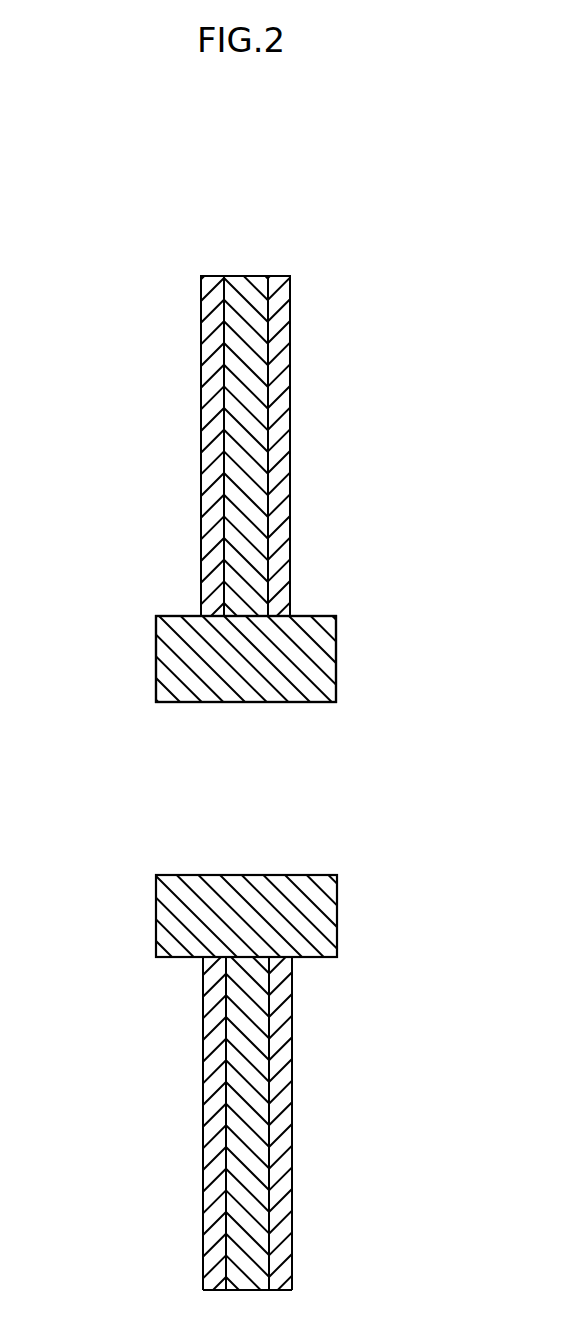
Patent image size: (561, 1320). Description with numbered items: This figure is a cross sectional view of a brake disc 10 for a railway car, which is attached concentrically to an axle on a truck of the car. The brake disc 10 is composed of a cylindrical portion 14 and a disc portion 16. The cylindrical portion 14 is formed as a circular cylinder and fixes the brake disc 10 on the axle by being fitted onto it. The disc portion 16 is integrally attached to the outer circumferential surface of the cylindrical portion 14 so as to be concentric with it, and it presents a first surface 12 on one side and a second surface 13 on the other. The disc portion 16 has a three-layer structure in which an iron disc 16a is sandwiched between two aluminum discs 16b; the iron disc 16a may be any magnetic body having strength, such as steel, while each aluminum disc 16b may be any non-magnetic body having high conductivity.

The brake disc 10 is at (315, 238).
The first surface 12 is at (205, 1068).
The second surface 13 is at (292, 1047).
The cylindrical portion 14 is at (293, 657).
The disc portion 16 is at (410, 338).
The iron disc 16a is at (207, 359).
The aluminum disc 16b is at (247, 400).